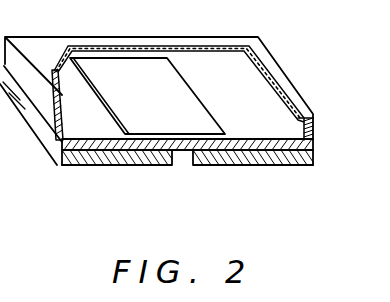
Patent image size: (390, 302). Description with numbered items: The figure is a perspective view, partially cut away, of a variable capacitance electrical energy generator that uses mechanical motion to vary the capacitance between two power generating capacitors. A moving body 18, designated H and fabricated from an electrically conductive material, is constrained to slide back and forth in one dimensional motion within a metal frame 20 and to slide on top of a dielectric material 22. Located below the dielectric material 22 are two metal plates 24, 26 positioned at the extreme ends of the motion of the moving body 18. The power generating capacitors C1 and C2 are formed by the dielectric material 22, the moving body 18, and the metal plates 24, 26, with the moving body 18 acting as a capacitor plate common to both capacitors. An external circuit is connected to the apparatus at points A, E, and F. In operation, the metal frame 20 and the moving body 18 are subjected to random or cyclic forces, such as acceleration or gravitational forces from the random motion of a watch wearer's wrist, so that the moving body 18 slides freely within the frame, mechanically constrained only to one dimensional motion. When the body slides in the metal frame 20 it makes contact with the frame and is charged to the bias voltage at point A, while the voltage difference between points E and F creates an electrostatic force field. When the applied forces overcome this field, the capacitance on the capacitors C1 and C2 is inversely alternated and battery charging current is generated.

The metal frame 20 is at (28, 42).
The connection point A is at (245, 36).
The moving body 18 is at (150, 135).
The moving body H is at (194, 102).
The dielectric material 22 is at (315, 148).
The metal plate 24 is at (97, 164).
The metal plate 26 is at (300, 166).
The power generating capacitor C1 is at (146, 165).
The power generating capacitor C2 is at (206, 166).
The connection point E is at (258, 166).
The connection point F is at (56, 164).